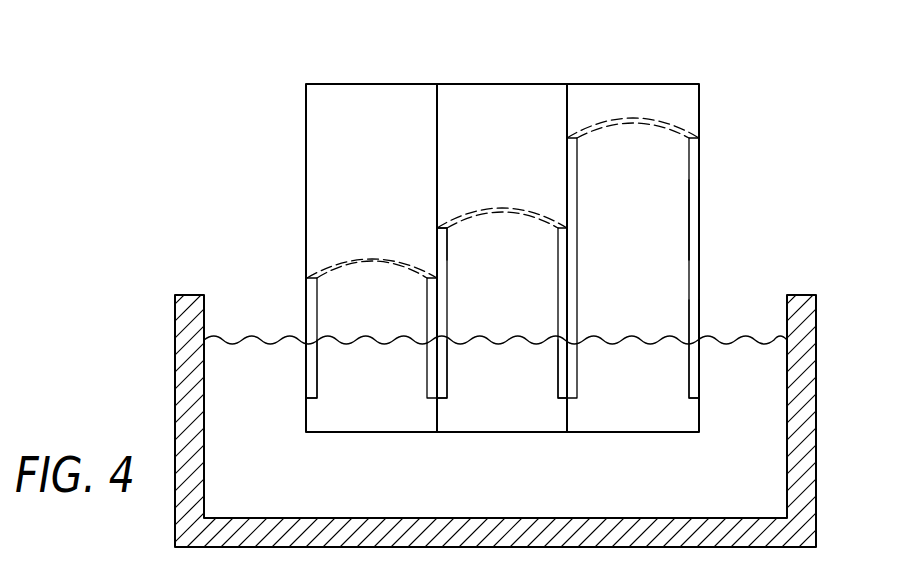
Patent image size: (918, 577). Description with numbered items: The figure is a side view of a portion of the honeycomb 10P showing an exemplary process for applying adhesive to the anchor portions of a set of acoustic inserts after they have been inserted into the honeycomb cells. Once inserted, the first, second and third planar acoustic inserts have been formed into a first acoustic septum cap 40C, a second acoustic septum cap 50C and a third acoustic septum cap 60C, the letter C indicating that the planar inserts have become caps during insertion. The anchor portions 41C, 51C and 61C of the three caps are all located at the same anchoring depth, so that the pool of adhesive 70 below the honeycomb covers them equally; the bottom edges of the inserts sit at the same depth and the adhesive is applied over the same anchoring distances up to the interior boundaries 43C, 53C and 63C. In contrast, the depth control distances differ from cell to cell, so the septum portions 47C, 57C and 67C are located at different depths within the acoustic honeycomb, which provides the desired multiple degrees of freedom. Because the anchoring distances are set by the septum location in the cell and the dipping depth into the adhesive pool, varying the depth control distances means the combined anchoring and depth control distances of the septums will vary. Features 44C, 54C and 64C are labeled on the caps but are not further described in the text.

The honeycomb 10P is at (320, 84).
The first acoustic septum cap 40C is at (306, 305).
The anchor portion 41C is at (317, 369).
The interior boundary 43C is at (308, 322).
The first cell top 44C is at (308, 292).
The septum portion 47C is at (350, 262).
The second acoustic septum cap 50C is at (448, 293).
The anchor portion 51C is at (447, 375).
The interior boundary 53C is at (557, 333).
The second cell top edge 54C is at (440, 243).
The septum portion 57C is at (512, 208).
The third acoustic septum cap 60C is at (700, 168).
The anchor portion 61C is at (700, 367).
The interior boundary 63C is at (693, 332).
The third cell wall 64C is at (695, 213).
The septum portion 67C is at (660, 120).
The pool of adhesive 70 is at (747, 432).